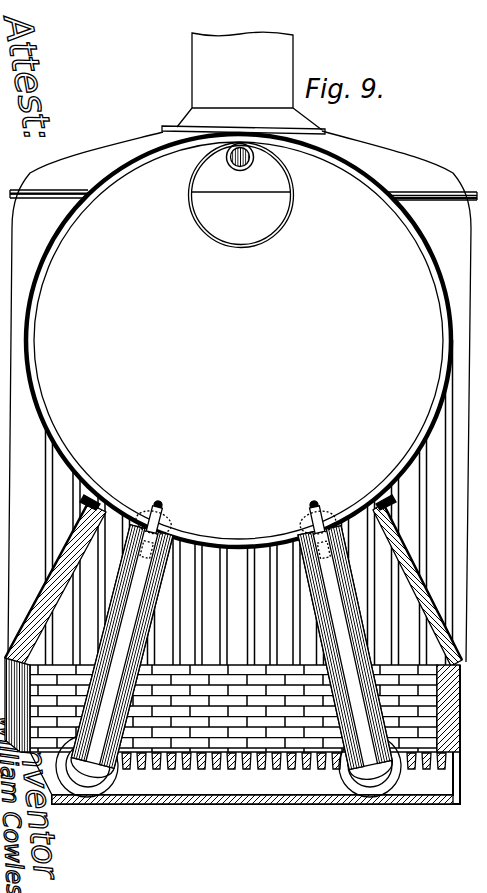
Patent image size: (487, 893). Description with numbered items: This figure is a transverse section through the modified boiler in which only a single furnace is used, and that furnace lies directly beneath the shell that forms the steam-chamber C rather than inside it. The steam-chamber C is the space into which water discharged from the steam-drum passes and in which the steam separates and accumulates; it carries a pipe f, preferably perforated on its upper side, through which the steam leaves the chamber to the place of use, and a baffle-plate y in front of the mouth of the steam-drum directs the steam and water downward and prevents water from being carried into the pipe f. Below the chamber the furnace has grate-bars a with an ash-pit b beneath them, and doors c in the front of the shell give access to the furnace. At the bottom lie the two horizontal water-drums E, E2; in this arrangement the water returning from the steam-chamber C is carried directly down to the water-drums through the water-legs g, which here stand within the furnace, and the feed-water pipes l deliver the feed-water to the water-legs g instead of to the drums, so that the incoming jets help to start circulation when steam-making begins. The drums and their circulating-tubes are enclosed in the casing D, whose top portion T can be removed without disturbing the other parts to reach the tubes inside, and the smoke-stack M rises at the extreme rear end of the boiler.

The smoke stack M is at (243, 83).
The top portion of the casing T is at (418, 165).
The casing D is at (239, 396).
The steam-chamber C is at (238, 340).
The doors c is at (249, 502).
The water-drums E is at (237, 195).
The pipe f is at (226, 158).
The baffle-plate y is at (241, 183).
The ash-pits b is at (232, 731).
The grate-bars a is at (284, 772).
The burner cups E2 is at (108, 783).
The water-legs g is at (148, 603).
The feed-water pipes l is at (235, 523).